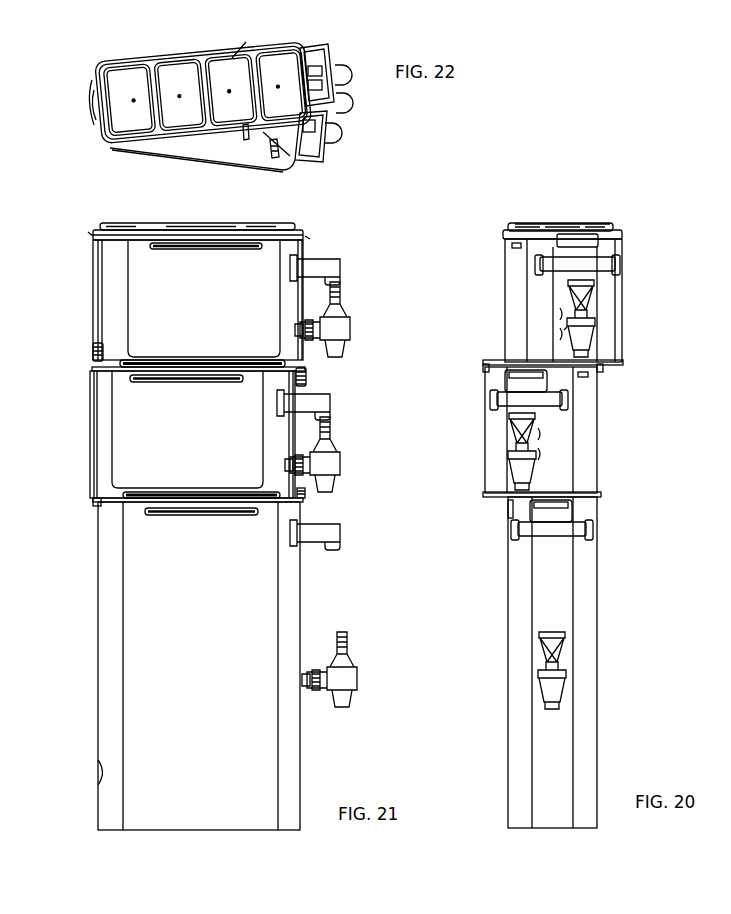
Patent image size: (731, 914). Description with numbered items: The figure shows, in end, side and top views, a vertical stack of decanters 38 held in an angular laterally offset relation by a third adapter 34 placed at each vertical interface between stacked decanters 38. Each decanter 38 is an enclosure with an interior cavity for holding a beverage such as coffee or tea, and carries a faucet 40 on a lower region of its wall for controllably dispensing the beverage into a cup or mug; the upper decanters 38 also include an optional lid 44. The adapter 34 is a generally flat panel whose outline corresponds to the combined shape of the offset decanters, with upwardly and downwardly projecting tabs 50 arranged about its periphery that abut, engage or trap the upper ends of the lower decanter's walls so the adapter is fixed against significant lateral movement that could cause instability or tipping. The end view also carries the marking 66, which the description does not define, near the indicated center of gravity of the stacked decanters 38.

In FIG. 22, the third adapter 34 is at (176, 160).
In FIG. 21, the third adapter 34 is at (308, 368).
In FIG. 20, the third adapter 34 is at (628, 362).
In FIG. 22, the decanter 38 is at (97, 64).
In FIG. 21, the decanter 38 is at (92, 300).
In FIG. 20, the decanter 38 is at (622, 299).
In FIG. 22, the faucet 40 is at (344, 70).
In FIG. 21, the faucet 40 is at (351, 326).
In FIG. 20, the faucet 40 is at (597, 340).
In FIG. 22, the lid 44 is at (247, 45).
In FIG. 20, the lid 44 is at (600, 222).
In FIG. 22, the tabs 50 is at (275, 160).
In FIG. 21, the tabs 50 is at (92, 352).
In FIG. 20, the tabs 50 is at (540, 352).
In FIG. 20, the fastener 66 is at (556, 328).